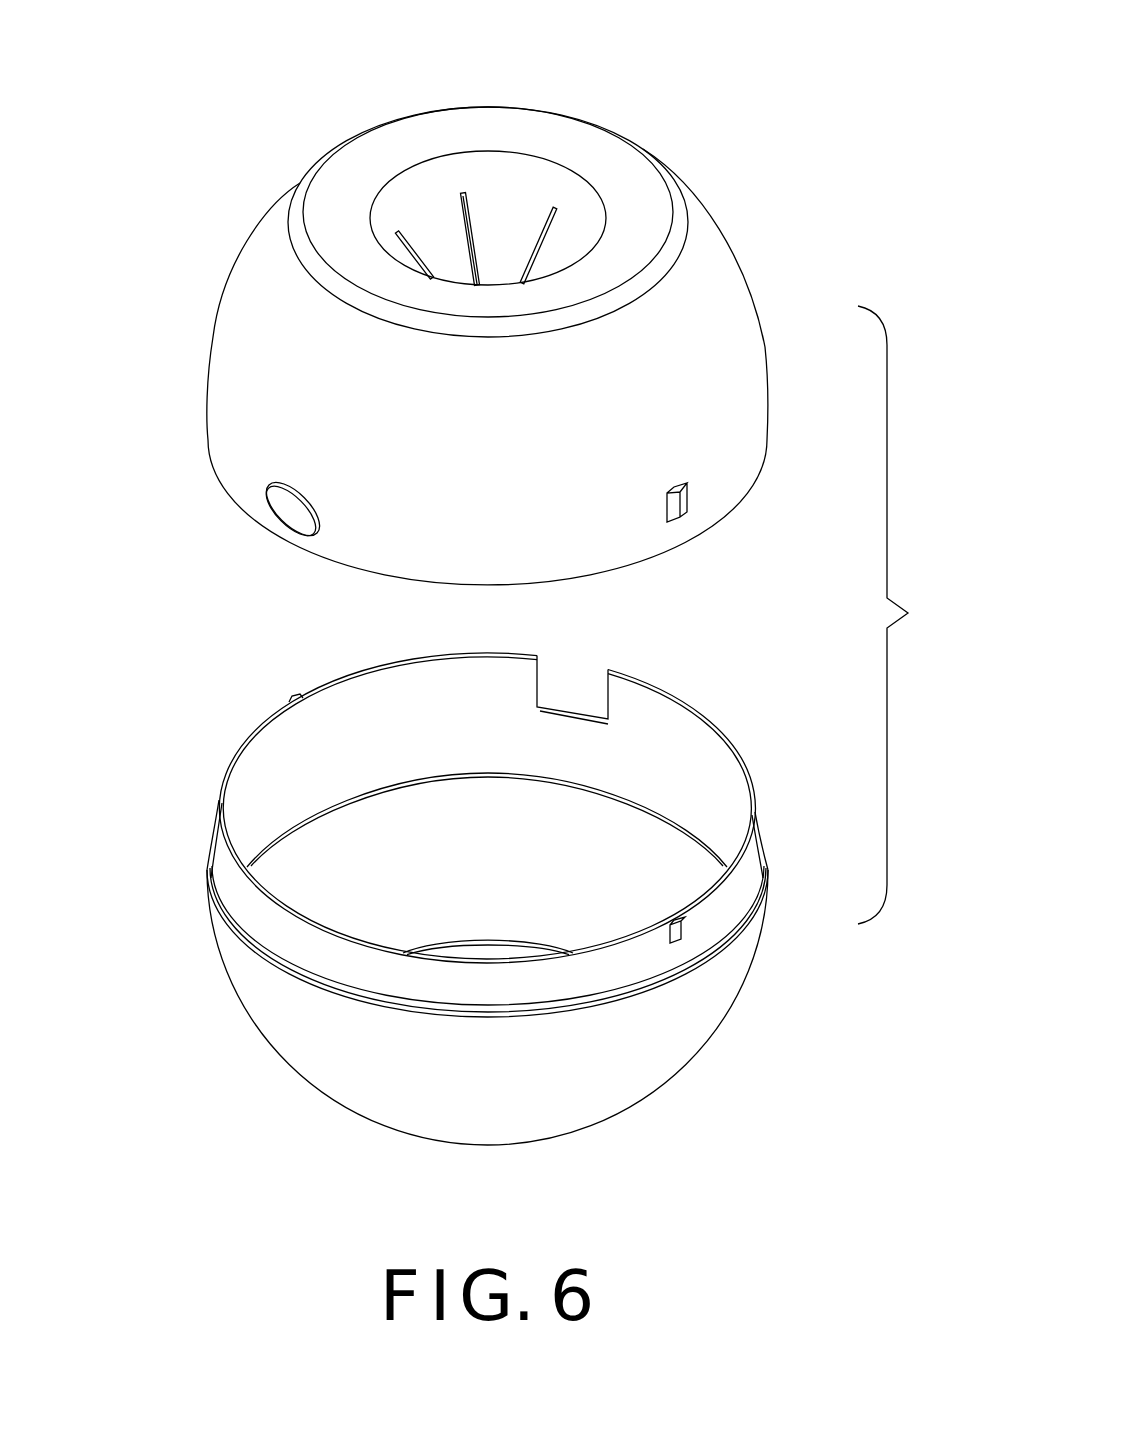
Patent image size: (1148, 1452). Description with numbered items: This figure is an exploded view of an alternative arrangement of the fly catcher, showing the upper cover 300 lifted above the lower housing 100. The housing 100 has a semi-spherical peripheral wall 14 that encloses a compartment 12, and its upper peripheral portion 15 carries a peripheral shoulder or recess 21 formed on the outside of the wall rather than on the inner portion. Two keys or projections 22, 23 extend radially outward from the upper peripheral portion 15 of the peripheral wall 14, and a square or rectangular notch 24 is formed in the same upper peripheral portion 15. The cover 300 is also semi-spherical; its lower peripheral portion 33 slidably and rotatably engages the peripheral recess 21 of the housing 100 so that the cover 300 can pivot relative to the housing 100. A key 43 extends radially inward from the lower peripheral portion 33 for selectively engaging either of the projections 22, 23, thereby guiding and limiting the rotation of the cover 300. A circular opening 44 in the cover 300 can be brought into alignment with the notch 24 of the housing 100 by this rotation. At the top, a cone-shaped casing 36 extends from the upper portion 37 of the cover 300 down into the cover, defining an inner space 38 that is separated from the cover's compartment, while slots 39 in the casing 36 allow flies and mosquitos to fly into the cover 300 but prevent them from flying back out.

The cover 300 is at (468, 300).
The lower peripheral portion 33 is at (755, 438).
The upper portion 37 is at (688, 195).
The cone-shaped casing 36 is at (513, 185).
The space 38 is at (449, 150).
The slots 39 is at (468, 223).
The circular opening 44 is at (283, 518).
The key 43 is at (687, 500).
The housing 100 is at (474, 872).
The peripheral wall 14 is at (667, 1040).
The upper peripheral portion 15 is at (750, 855).
The peripheral recess 21 is at (429, 781).
The notch 24 is at (608, 694).
The projection 22 is at (291, 697).
The compartment 12 is at (610, 832).
The projection 23 is at (686, 930).